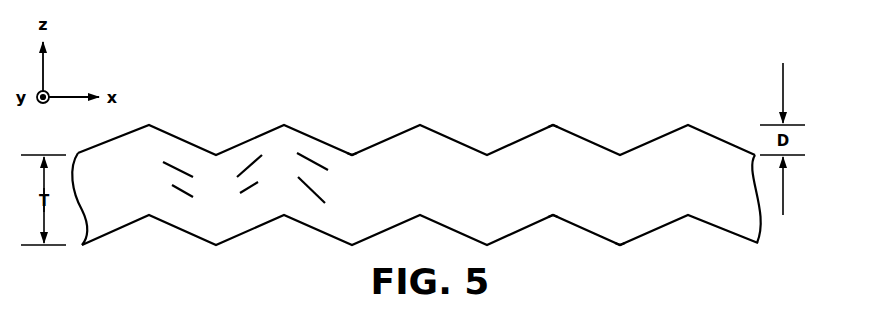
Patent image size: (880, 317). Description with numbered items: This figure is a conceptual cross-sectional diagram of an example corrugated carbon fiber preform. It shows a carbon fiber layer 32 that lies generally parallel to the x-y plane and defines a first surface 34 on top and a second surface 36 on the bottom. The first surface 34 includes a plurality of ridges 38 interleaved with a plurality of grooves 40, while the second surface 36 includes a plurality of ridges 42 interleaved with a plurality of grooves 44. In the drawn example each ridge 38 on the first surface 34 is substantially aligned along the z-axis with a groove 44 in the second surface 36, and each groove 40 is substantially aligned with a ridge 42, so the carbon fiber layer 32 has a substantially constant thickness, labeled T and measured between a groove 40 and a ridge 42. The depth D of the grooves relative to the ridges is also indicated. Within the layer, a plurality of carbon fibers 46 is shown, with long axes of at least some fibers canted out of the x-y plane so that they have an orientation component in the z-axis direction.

The carbon fiber layer 32 is at (742, 232).
The first surface 34 is at (590, 137).
The second surface 36 is at (100, 236).
The ridges 38 is at (424, 124).
The grooves 40 is at (355, 152).
The ridges 42 is at (625, 246).
The grooves 44 is at (557, 218).
The carbon fibers 46 is at (285, 151).